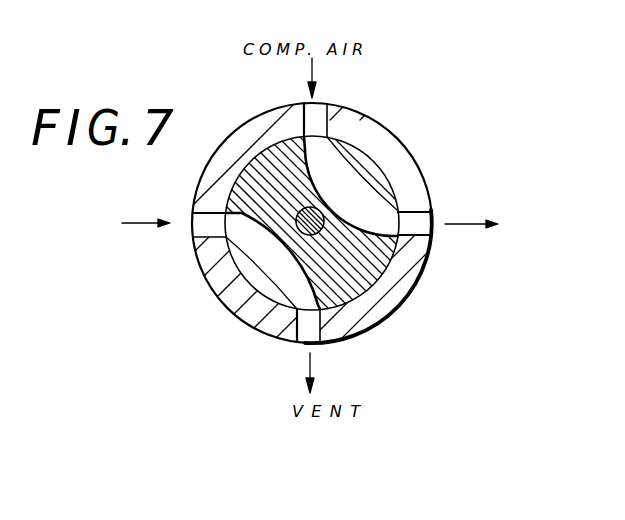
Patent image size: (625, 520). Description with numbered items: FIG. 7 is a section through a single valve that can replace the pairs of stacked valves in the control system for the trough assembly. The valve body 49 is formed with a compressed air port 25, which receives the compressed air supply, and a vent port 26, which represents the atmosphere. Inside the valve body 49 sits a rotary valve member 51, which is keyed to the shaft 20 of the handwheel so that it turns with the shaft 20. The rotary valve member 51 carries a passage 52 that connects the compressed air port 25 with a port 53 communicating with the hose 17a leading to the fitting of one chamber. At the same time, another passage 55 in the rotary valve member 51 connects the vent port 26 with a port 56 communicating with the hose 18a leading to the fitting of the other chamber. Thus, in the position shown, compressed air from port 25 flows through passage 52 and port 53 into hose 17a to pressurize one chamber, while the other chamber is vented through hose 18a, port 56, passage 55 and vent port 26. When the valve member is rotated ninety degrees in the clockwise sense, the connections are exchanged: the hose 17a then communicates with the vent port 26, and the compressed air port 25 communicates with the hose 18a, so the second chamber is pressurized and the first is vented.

The valve body 49 is at (248, 126).
The compressed air port 25 is at (322, 113).
The vent port 26 is at (306, 334).
The rotary valve member 51 is at (357, 158).
The passage 52 is at (352, 209).
The port 53 is at (421, 229).
The hose 17a is at (494, 229).
The hose 18a is at (121, 232).
The shaft 20 is at (298, 212).
The passage 55 is at (283, 255).
The port 56 is at (207, 227).